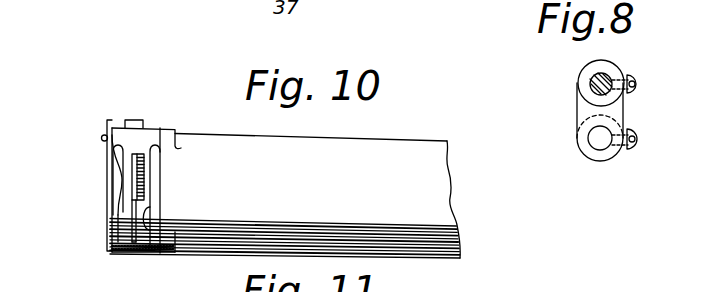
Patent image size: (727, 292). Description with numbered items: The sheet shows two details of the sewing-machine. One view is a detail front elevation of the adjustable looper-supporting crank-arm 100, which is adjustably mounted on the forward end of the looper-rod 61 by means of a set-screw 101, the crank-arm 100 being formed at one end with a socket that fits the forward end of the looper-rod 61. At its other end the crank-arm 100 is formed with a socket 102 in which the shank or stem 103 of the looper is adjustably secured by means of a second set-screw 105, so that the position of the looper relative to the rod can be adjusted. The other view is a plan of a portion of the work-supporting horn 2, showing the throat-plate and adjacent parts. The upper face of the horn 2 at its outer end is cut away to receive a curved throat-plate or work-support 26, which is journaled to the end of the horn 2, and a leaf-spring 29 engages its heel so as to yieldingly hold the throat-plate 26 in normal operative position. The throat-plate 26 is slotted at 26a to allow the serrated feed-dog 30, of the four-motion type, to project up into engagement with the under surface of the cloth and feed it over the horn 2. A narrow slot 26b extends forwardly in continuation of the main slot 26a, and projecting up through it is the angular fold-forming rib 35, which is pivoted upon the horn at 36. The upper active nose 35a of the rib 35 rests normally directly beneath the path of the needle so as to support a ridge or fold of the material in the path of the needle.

In FIG. 10, the work-supporting horn 2 is at (285, 196).
In FIG. 10, the throat-plate 26 is at (160, 163).
In FIG. 10, the slot 26a is at (128, 190).
In FIG. 10, the narrow slot 26b is at (132, 203).
In FIG. 10, the leaf-spring 29 is at (134, 120).
In FIG. 10, the feed-dog 30 is at (144, 183).
In FIG. 10, the fold-forming rib 35 is at (112, 157).
In FIG. 10, the nose 35a is at (118, 223).
In FIG. 10, the pivot 36 is at (102, 136).
In FIG. 8, the looper-rod 61 is at (596, 138).
In FIG. 8, the crank-arm 100 is at (620, 110).
In FIG. 8, the set-screw 101 is at (637, 146).
In FIG. 8, the socket 102 is at (588, 73).
In FIG. 8, the shank 103 is at (606, 78).
In FIG. 8, the set-screw 105 is at (638, 83).